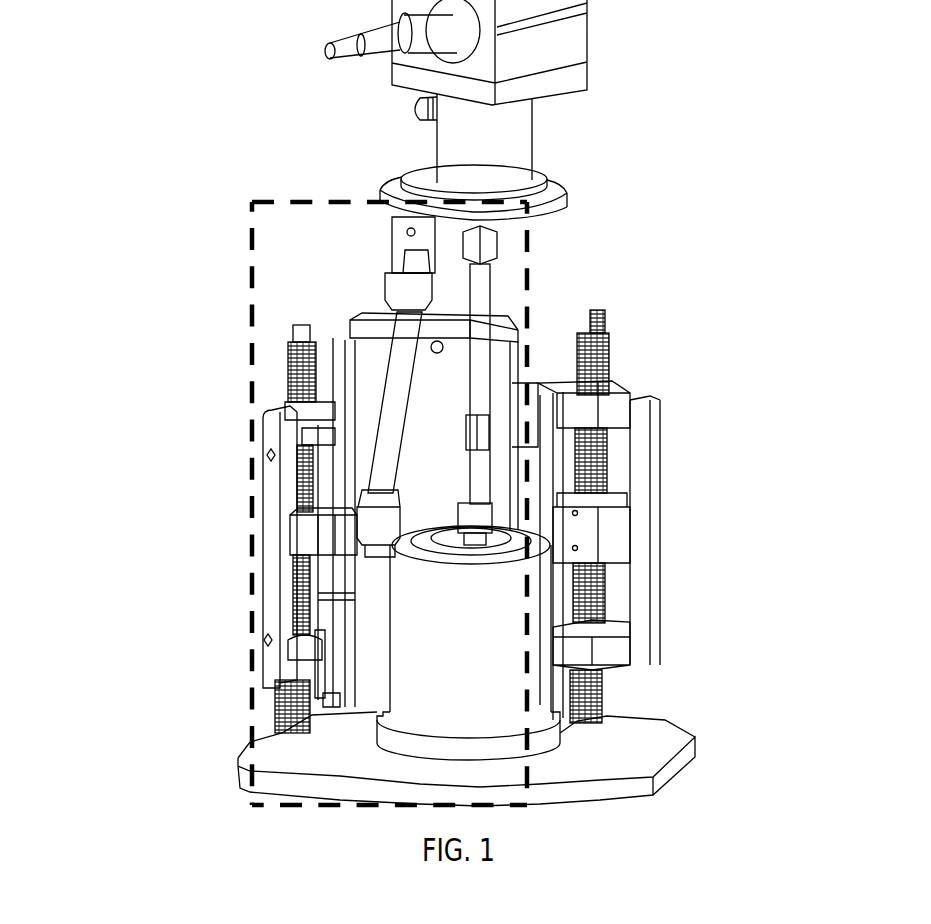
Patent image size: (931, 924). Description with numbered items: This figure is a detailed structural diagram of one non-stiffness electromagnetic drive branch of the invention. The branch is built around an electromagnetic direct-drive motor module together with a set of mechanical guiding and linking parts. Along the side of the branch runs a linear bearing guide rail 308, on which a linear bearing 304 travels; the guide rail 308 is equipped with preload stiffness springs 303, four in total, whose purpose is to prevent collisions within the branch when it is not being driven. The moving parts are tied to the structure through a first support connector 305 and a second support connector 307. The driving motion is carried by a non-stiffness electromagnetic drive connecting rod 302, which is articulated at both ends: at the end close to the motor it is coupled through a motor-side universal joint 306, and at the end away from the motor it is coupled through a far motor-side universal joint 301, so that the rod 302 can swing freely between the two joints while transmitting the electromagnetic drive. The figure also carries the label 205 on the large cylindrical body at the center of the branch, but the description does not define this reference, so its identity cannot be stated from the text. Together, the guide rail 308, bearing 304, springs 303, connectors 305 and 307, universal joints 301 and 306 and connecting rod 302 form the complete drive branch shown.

The motor 205 is at (500, 688).
The far motor-side universal joint 301 is at (402, 265).
The non-stiffness electromagnetic drive connecting rod 302 is at (402, 333).
The preload stiffness spring 303 is at (297, 383).
The linear bearing 304 is at (305, 512).
The support connector 1 305 is at (305, 542).
The motor-side universal joint 306 is at (365, 550).
The support connector 2 307 is at (588, 408).
The linear bearing guide rail 308 is at (598, 318).